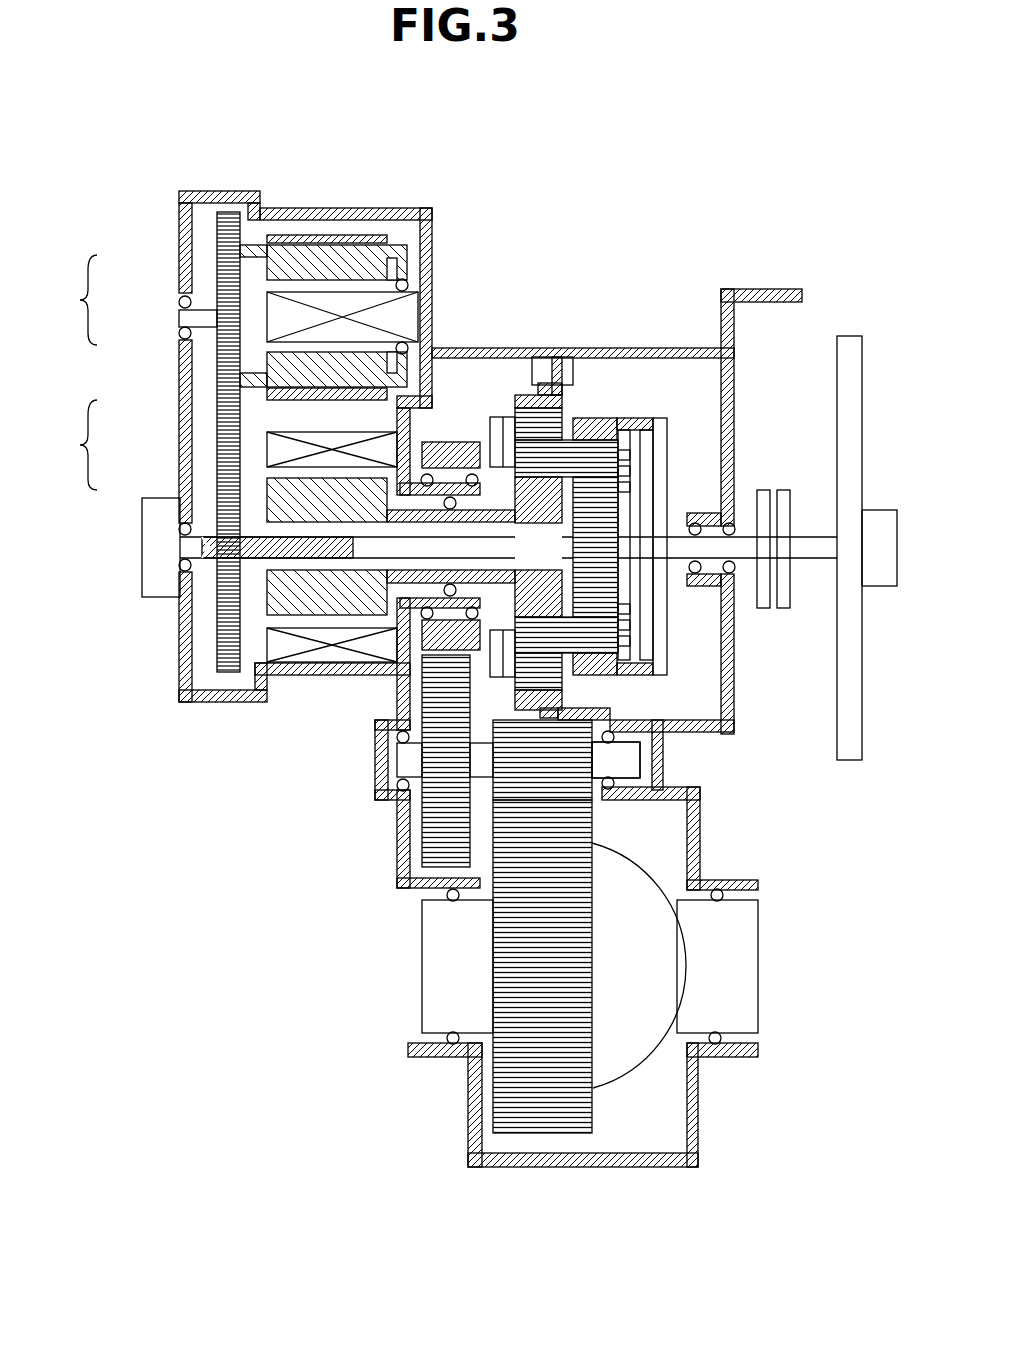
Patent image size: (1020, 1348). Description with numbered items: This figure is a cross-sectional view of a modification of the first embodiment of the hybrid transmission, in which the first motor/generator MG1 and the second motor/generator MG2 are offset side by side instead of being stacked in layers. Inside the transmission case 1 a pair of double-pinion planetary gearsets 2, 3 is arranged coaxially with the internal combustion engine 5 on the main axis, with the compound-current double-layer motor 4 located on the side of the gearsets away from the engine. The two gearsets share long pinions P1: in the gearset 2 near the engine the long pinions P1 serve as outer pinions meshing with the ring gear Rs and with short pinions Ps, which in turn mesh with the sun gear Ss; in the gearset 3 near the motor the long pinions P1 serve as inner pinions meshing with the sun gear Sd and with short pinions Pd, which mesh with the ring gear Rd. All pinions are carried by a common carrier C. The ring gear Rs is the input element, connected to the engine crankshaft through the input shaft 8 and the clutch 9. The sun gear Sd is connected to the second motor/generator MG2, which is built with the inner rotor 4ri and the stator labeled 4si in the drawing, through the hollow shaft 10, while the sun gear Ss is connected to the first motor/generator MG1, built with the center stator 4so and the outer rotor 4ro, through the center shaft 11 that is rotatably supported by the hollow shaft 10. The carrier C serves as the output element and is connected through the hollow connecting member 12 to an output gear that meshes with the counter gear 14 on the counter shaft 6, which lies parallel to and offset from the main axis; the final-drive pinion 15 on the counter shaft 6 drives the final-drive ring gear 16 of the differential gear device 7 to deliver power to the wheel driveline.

The transmission case 1 is at (483, 348).
The double-pinion planetary gearset 2 is at (615, 392).
The double-pinion planetary gearset 3 is at (523, 385).
The compound-current double-layer motor 4 is at (399, 232).
The internal combustion engine 5 is at (880, 528).
The counter shaft 6 is at (620, 758).
The differential gear device 7 is at (653, 863).
The input shaft 8 is at (742, 540).
The clutch 9 is at (783, 540).
The hollow shaft 10 is at (407, 575).
The center shaft 11 is at (370, 545).
The hollow connecting member 12 is at (450, 440).
The counter gear 14 is at (443, 817).
The final-drive pinion 15 is at (557, 757).
The final-drive ring gear 16 is at (560, 863).
The center stator 4so is at (282, 313).
The outer rotor 4ro is at (258, 372).
The inner stator 4si is at (282, 448).
The inner rotor 4ri is at (287, 502).
The first motor/generator MG1 is at (58, 300).
The second motor/generator MG2 is at (58, 445).
The common carrier C is at (490, 457).
The short pinion Pd is at (520, 420).
The ring gear Rd is at (557, 343).
The ring gear Rs is at (587, 427).
The long pinion P1 is at (600, 463).
The short pinion Ps is at (633, 463).
The sun gear Sd is at (573, 518).
The sun gear Ss is at (600, 552).